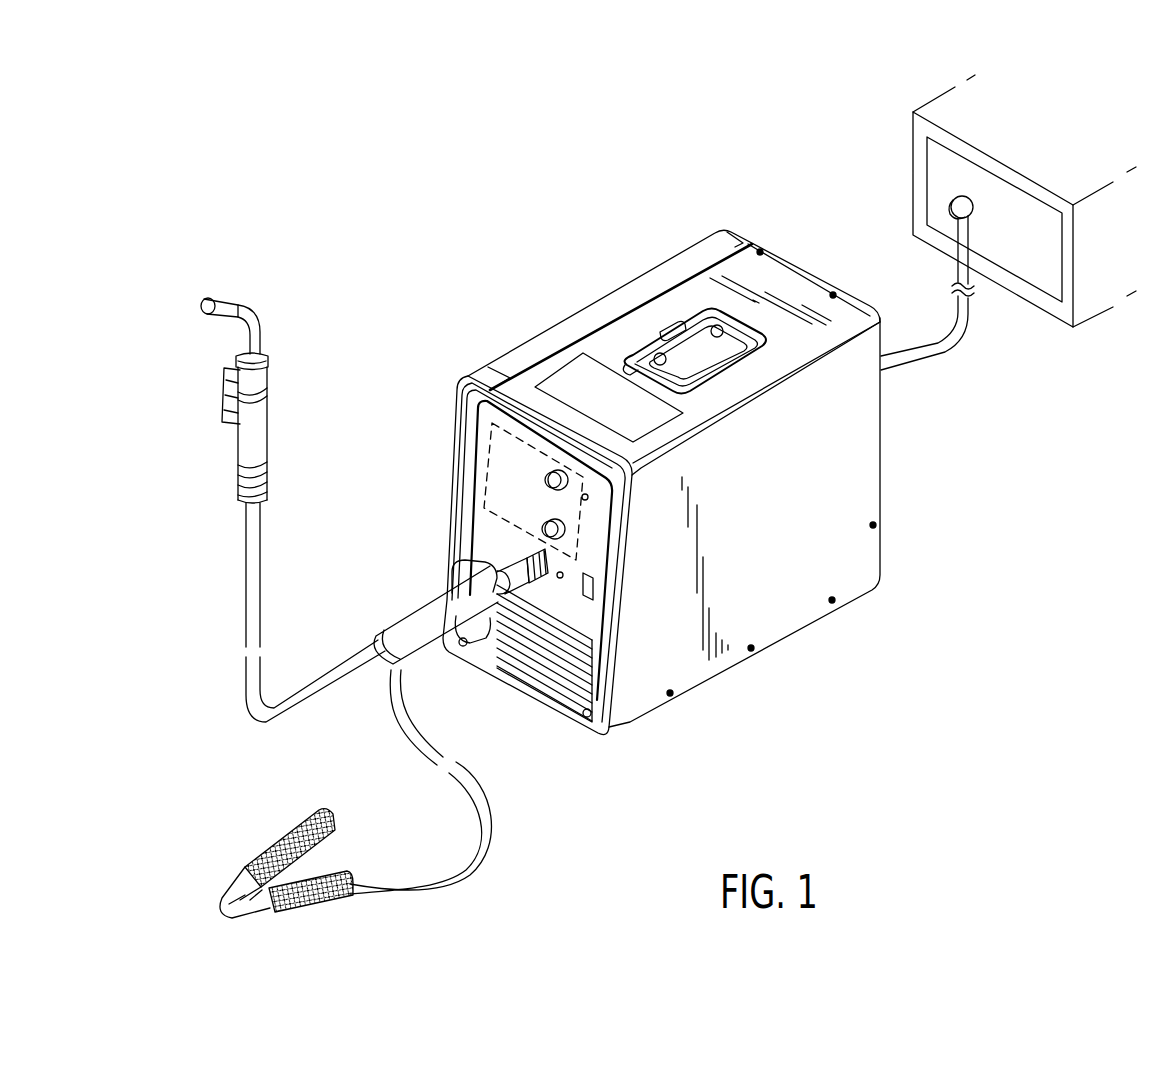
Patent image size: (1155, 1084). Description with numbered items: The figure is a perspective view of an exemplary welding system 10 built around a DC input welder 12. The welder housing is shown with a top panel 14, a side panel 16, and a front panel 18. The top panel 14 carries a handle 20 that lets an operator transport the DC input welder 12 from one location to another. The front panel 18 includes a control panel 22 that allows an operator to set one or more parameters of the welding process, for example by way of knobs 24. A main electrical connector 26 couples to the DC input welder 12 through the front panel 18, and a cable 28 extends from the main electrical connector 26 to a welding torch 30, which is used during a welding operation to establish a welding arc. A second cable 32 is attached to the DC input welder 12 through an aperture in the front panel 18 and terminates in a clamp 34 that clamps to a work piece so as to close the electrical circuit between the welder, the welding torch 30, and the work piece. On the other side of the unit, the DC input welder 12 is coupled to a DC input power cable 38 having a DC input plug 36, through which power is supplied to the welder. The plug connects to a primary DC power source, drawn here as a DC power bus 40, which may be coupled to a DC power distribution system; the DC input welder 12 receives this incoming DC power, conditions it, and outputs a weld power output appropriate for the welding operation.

The welding system 10 is at (495, 304).
The DC input welder 12 is at (660, 264).
The top panel 14 is at (800, 277).
The side panel 16 is at (880, 558).
The front panel 18 is at (463, 390).
The handle 20 is at (735, 368).
The control panel 22 is at (503, 474).
The knobs 24 is at (592, 516).
The main electrical connector 26 is at (440, 643).
The cable 28 is at (262, 623).
The welding torch 30 is at (262, 410).
The second cable 32 is at (466, 783).
The clamp 34 is at (281, 852).
The DC input plug 36 is at (950, 207).
The DC input power cable 38 is at (957, 272).
The DC power bus 40 is at (912, 172).